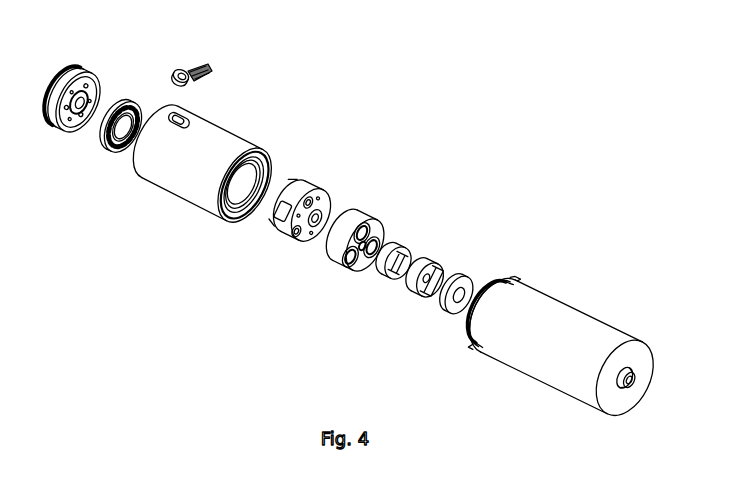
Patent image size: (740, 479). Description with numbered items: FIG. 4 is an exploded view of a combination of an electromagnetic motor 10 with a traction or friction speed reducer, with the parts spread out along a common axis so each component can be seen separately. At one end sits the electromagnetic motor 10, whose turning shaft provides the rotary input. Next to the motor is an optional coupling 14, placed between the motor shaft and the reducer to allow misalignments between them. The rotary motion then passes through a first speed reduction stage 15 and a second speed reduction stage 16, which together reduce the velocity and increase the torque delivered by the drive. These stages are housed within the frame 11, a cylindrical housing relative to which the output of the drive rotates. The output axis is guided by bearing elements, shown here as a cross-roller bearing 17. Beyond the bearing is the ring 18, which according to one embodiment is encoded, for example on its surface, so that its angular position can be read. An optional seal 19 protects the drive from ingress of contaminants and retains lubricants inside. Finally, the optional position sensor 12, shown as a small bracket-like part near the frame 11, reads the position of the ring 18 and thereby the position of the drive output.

The electromagnetic motor 10 is at (562, 318).
The frame 11 is at (232, 145).
The position sensor 12 is at (173, 70).
The coupling 14 is at (393, 329).
The first speed reduction stage 15 is at (368, 300).
The second speed reduction stage 16 is at (265, 265).
The cross-roller bearing 17 is at (112, 166).
The ring 18 is at (57, 136).
The seal 19 is at (57, 72).